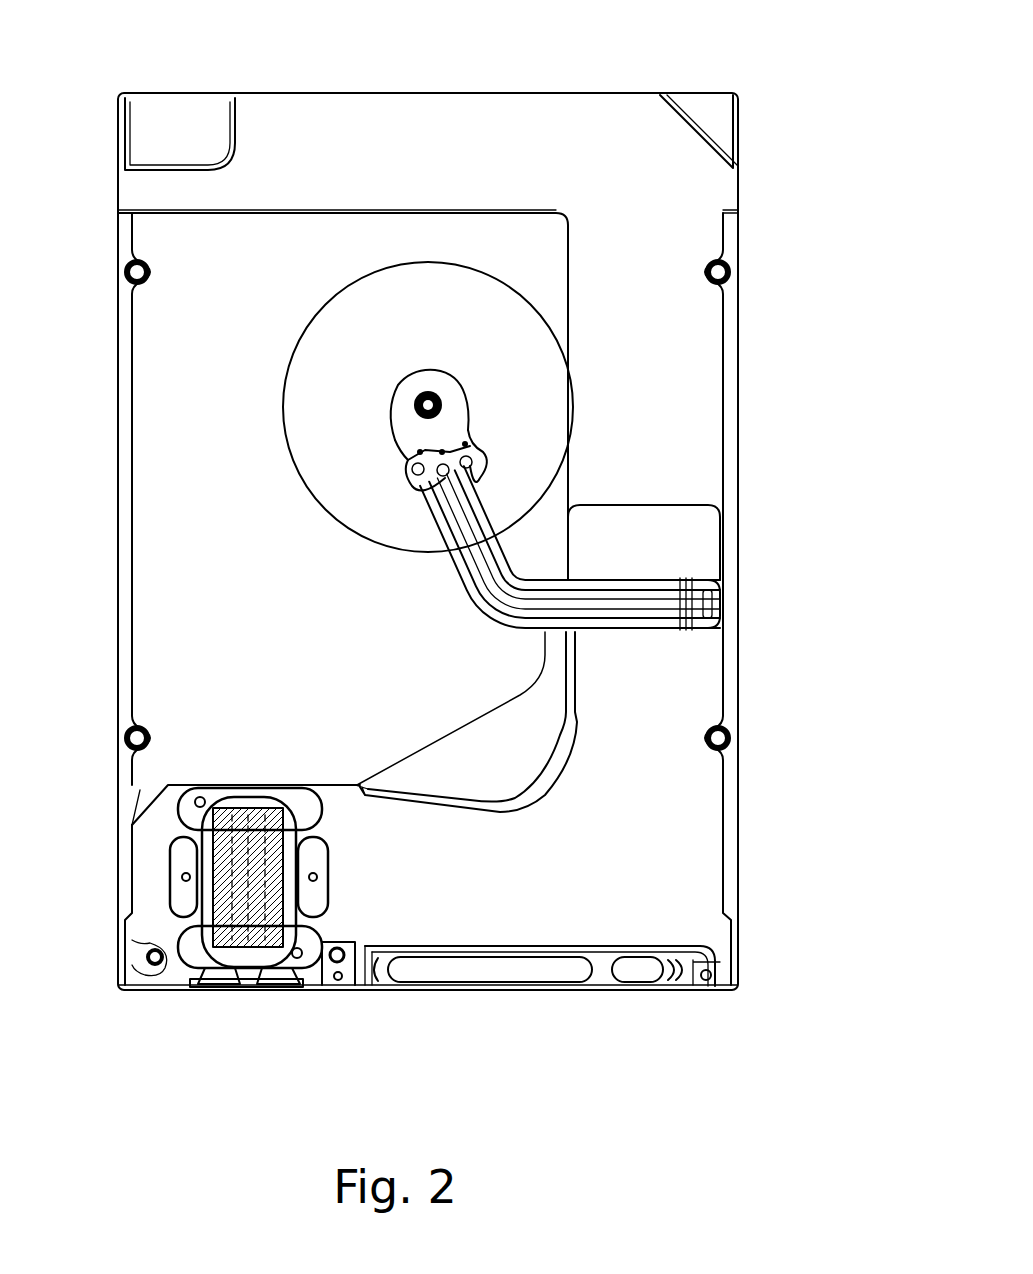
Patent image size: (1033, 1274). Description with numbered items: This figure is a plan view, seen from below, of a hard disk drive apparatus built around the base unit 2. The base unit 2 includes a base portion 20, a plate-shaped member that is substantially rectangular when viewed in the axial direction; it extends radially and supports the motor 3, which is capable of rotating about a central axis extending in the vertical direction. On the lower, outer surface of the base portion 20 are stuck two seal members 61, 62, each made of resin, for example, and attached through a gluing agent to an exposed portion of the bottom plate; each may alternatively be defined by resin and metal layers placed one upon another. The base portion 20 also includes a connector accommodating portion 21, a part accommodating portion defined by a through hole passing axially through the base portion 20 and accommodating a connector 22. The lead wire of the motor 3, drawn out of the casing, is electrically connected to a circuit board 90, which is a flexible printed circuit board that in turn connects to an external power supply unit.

The base unit 2 is at (628, 84).
The motor 3 is at (370, 402).
The base portion 20 is at (198, 610).
The connector accommodating portion 21 is at (245, 850).
The connector 22 is at (258, 940).
The seal member 61 is at (443, 398).
The seal member 62 is at (455, 440).
The circuit board 90 is at (490, 590).